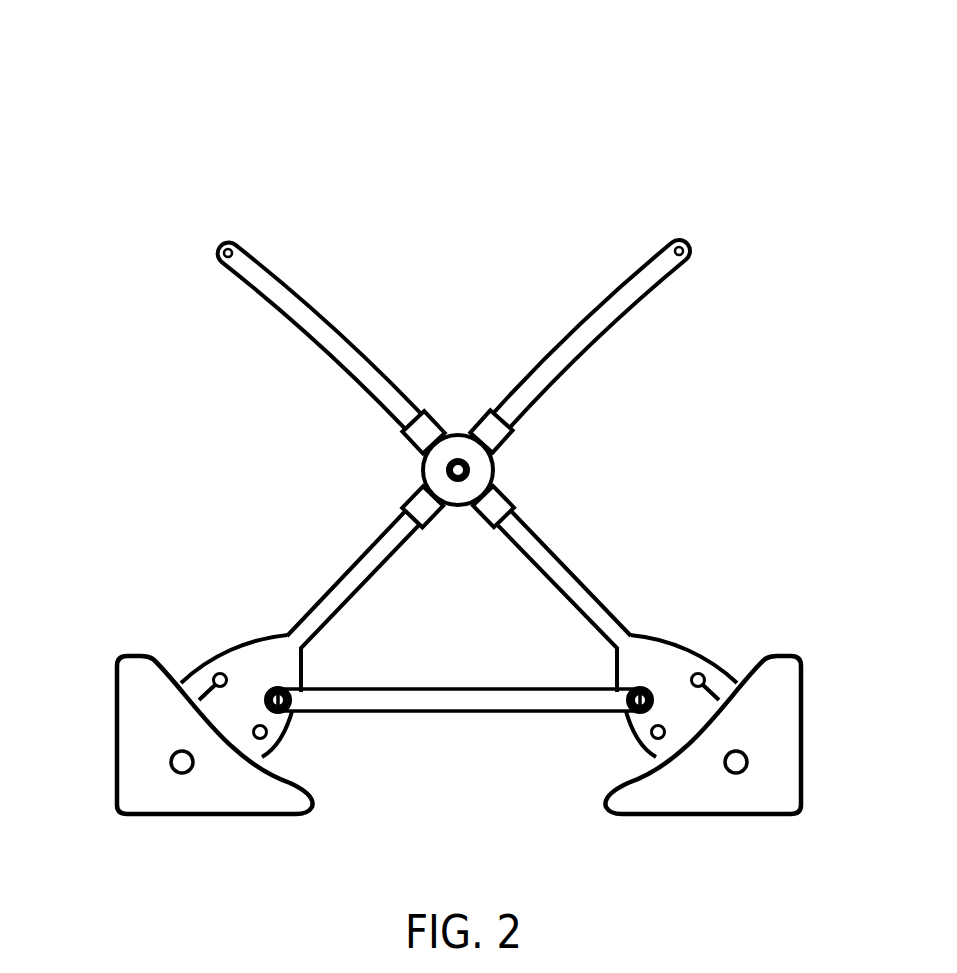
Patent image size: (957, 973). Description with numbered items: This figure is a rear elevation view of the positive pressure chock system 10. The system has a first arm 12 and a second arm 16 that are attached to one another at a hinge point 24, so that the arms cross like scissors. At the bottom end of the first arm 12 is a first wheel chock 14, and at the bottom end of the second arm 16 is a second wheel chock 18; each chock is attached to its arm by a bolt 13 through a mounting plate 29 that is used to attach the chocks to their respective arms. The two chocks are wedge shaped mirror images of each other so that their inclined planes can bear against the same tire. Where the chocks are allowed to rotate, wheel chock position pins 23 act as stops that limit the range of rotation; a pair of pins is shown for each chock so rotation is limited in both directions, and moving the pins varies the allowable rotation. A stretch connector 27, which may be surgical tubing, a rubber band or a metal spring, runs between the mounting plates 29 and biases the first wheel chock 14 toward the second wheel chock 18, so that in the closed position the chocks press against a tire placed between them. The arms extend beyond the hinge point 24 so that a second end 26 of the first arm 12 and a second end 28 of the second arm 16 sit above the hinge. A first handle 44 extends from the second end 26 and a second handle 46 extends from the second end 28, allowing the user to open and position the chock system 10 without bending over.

The positive pressure chock system 10 is at (461, 493).
The first arm 12 is at (555, 557).
The bolt 13 is at (184, 764).
The first wheel chock 14 is at (803, 737).
The second arm 16 is at (350, 568).
The second wheel chock 18 is at (117, 735).
The wheel chock position pin 23 is at (258, 724).
The hinge point 24 is at (456, 464).
The second end of first arm 26 is at (238, 277).
The stretch connector 27 is at (488, 702).
The second end of second arm 28 is at (668, 275).
The mounting plate 29 is at (258, 747).
The first handle 44 is at (226, 250).
The second handle 46 is at (680, 248).